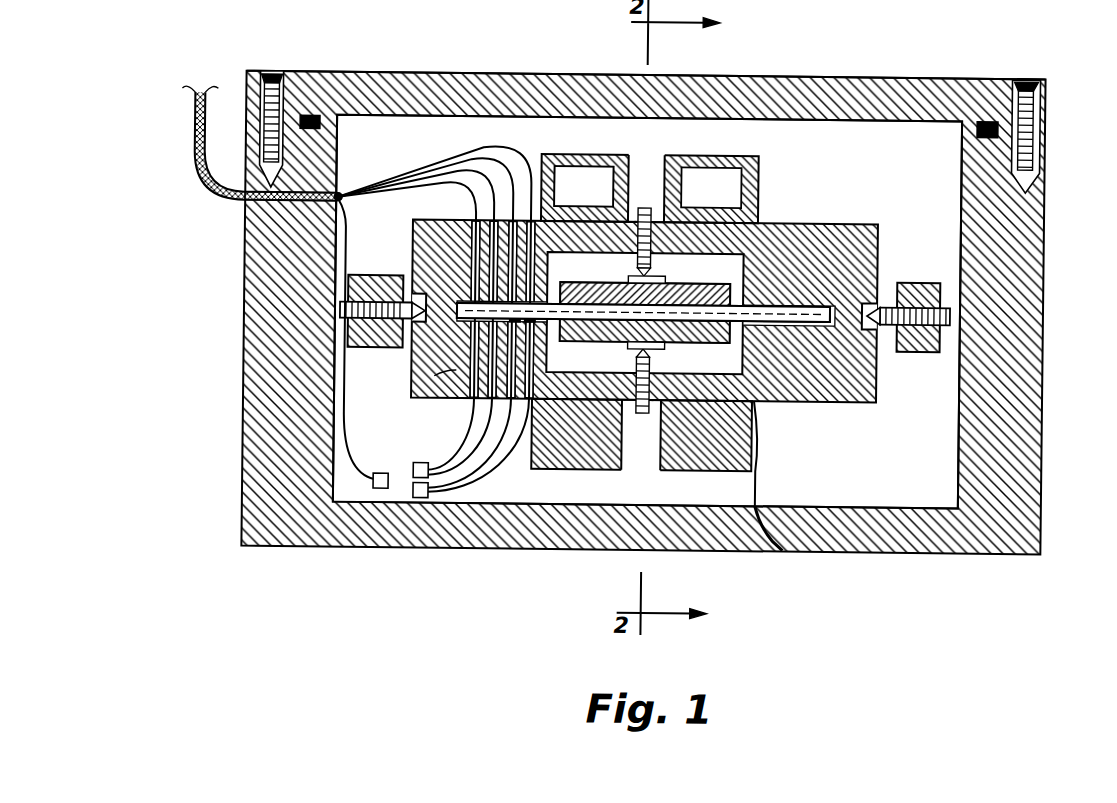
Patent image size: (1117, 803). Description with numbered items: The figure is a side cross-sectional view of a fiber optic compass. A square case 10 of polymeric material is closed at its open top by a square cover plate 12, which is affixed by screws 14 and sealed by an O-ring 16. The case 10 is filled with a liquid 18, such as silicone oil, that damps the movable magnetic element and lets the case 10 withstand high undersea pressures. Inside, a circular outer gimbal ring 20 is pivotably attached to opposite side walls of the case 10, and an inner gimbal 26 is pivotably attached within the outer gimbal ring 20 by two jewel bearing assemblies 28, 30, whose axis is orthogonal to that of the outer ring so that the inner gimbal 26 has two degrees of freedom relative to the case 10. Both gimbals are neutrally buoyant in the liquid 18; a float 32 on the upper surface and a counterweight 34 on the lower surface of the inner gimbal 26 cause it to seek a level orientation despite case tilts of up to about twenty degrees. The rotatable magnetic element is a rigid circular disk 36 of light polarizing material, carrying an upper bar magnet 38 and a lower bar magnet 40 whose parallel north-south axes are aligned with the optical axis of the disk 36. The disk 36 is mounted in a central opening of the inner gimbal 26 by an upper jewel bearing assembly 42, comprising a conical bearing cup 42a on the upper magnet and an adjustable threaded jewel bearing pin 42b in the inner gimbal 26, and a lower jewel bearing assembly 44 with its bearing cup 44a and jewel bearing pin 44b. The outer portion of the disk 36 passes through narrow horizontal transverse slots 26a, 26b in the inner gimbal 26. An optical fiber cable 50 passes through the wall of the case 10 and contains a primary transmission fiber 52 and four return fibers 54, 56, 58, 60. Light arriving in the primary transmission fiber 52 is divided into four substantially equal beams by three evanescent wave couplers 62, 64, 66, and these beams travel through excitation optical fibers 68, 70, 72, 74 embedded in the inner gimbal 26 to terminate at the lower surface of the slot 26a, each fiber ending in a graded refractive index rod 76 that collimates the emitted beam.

The case 10 is at (1043, 468).
The cover plate 12 is at (873, 67).
The screws 14 is at (272, 74).
The O-ring 16 is at (316, 118).
The liquid 18 is at (918, 498).
The outer gimbal ring 20 is at (913, 351).
The inner gimbal 26 is at (875, 220).
The transverse slot 26a is at (414, 348).
The transverse slot 26b is at (808, 340).
The jewel bearing assembly 28 is at (887, 304).
The jewel bearing assembly 30 is at (398, 272).
The float 32 is at (722, 150).
The counterweight 34 is at (785, 549).
The disk 36 is at (828, 304).
The bar magnet 38 is at (735, 290).
The bar magnet 40 is at (755, 402).
The upper jewel bearing assembly 42 is at (603, 193).
The conical bearing cup 42a is at (664, 277).
The threaded jewel bearing pin 42b is at (643, 208).
The lower jewel bearing assembly 44 is at (697, 430).
The bearing cup 44a is at (630, 347).
The jewel bearing pin 44b is at (643, 413).
The optical fiber cable 50 is at (192, 134).
The primary transmission fiber 52 is at (346, 448).
The return fiber 54 is at (387, 183).
The return fiber 56 is at (413, 180).
The return fiber 58 is at (447, 170).
The return fiber 60 is at (520, 163).
The evanescent wave coupler 62 is at (382, 491).
The evanescent wave coupler 64 is at (422, 480).
The evanescent wave coupler 66 is at (422, 500).
The excitation optical fiber 68 is at (473, 420).
The excitation optical fiber 70 is at (470, 445).
The excitation optical fiber 72 is at (480, 467).
The excitation optical fiber 74 is at (500, 466).
The graded refractive index rod 76 is at (435, 378).